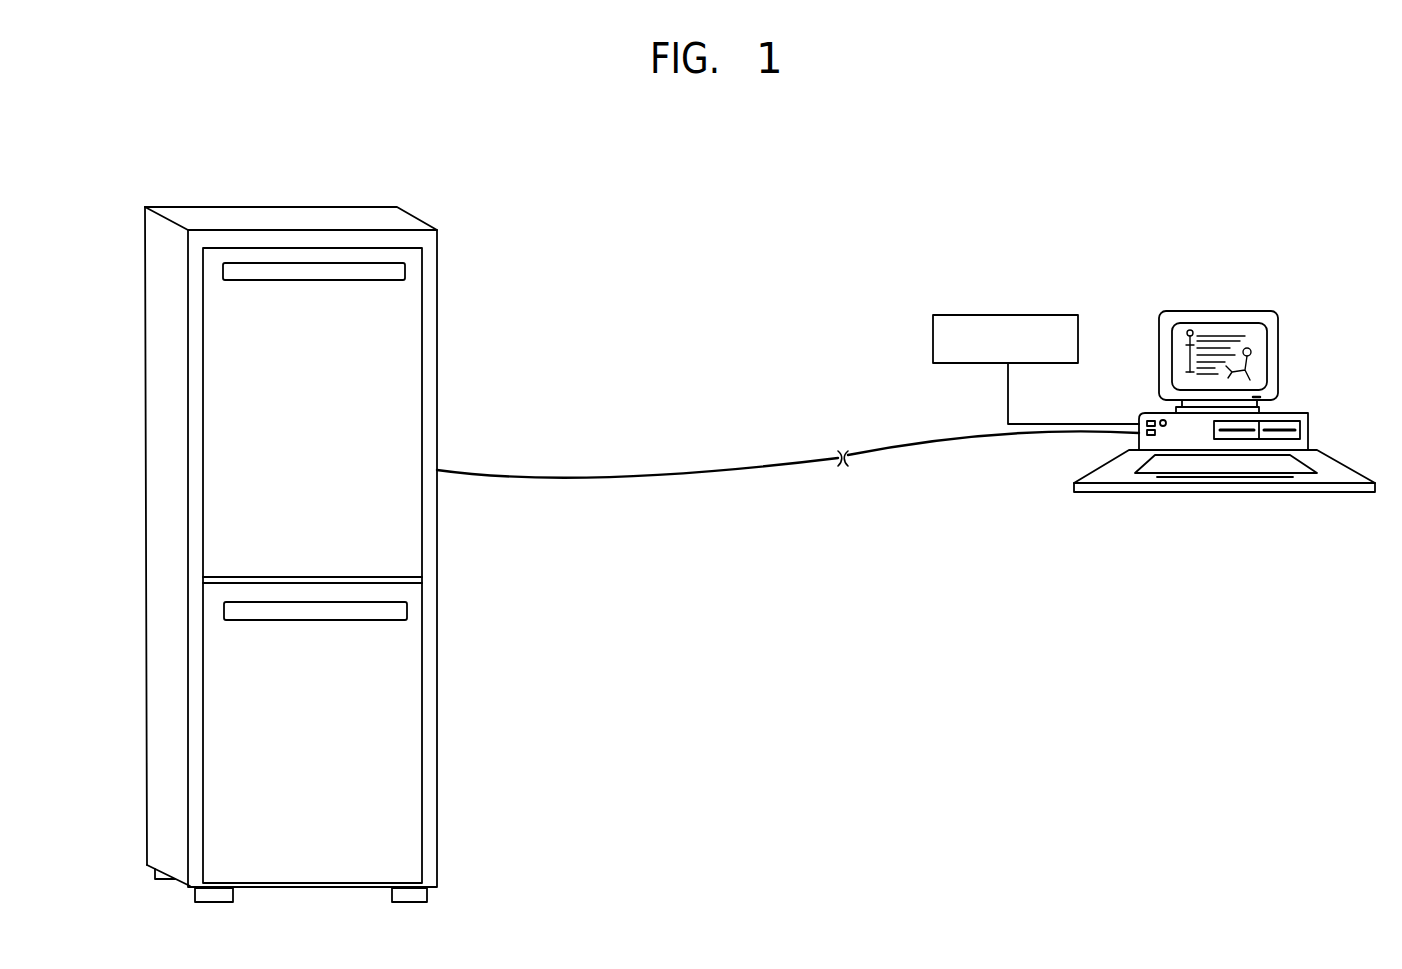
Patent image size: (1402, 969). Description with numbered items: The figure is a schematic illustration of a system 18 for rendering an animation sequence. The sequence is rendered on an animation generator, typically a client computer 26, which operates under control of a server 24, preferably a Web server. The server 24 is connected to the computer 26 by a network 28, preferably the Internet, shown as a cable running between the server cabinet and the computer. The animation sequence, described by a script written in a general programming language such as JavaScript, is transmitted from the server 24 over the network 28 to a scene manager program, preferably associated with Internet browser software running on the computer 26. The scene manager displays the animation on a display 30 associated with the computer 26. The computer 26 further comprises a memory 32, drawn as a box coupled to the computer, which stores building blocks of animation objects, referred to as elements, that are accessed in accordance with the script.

The system 18 is at (1124, 244).
The server 24 is at (437, 236).
The client computer 26 is at (1307, 414).
The network 28 is at (908, 437).
The display 30 is at (1278, 362).
The memory 32 is at (1078, 350).